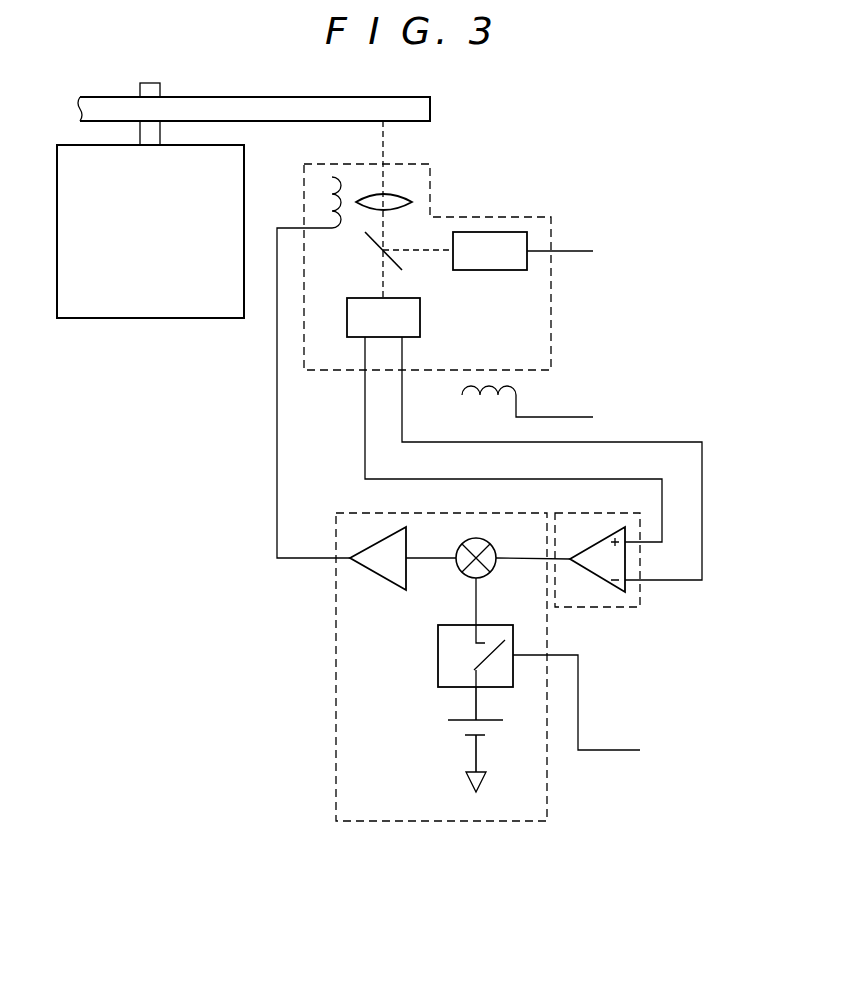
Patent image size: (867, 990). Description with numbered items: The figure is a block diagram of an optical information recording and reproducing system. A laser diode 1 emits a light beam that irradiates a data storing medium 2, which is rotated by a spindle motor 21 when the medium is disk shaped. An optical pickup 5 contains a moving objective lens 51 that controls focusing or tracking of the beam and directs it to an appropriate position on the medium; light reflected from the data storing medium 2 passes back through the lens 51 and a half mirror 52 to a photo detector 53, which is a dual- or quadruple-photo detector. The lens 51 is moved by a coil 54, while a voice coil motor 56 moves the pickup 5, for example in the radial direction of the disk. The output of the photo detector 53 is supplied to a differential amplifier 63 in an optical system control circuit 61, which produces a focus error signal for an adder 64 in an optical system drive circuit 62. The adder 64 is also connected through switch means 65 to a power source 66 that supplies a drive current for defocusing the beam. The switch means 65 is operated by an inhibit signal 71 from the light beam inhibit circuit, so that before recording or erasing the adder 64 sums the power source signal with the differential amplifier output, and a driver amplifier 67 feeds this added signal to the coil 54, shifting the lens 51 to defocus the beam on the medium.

The laser diode 1 is at (488, 232).
The data storing medium 2 is at (273, 97).
The optical pickup 5 is at (330, 370).
The spindle motor 21 is at (147, 318).
The moving objective lens 51 is at (404, 196).
The half mirror 52 is at (370, 246).
The photo detector 53 is at (420, 316).
The coil 54 is at (318, 199).
The voice coil motor 56 is at (489, 402).
The optical system control circuit 61 is at (620, 607).
The optical system drive circuit 62 is at (430, 821).
The differential amplifier 63 is at (594, 577).
The adder 64 is at (461, 545).
The switch means 65 is at (438, 663).
The power source 66 is at (455, 730).
The driver amplifier 67 is at (374, 578).
The inhibit signal 71 is at (608, 750).